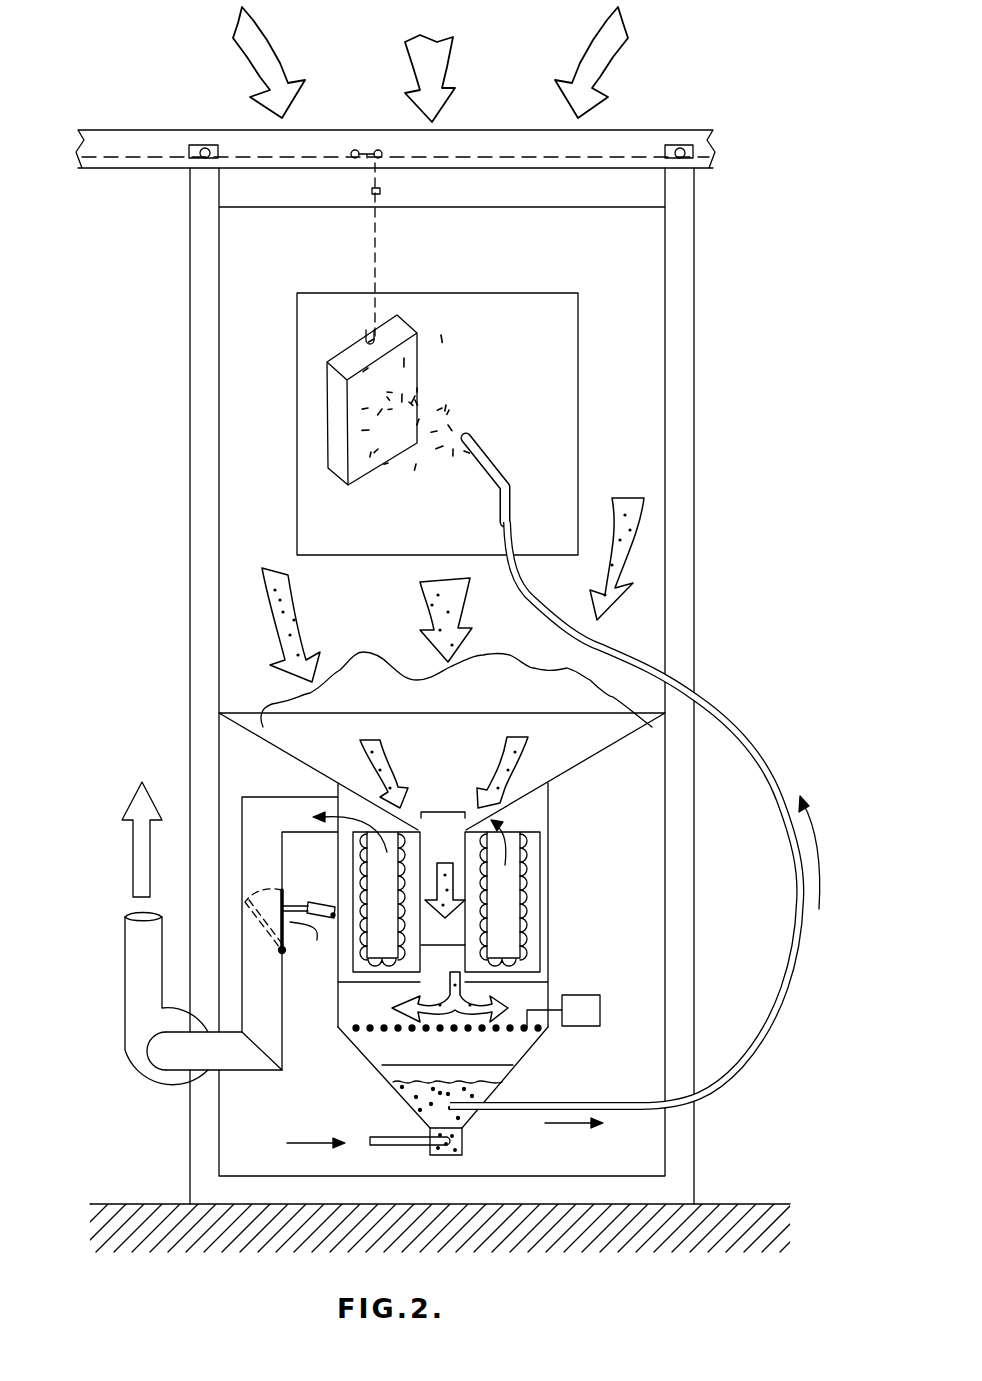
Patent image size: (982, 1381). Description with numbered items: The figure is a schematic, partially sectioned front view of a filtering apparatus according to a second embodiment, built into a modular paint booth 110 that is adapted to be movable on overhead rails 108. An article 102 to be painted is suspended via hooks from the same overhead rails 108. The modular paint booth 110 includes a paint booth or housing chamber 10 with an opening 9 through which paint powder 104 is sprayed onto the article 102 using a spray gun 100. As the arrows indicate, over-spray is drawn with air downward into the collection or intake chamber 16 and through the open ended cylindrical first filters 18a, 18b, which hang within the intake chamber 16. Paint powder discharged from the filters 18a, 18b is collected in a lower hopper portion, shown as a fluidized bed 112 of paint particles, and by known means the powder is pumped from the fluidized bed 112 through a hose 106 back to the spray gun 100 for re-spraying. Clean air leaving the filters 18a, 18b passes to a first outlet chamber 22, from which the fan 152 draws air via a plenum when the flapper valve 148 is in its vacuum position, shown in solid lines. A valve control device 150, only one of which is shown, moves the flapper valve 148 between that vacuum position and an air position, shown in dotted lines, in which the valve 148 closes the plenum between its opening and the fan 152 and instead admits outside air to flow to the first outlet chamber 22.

The opening 9 is at (556, 420).
The housing chamber 10 is at (529, 382).
The intake chamber 16 is at (450, 1062).
The first filter 18a is at (358, 962).
The first filter 18b is at (528, 895).
The first outlet chamber 22 is at (357, 800).
The spray gun 100 is at (503, 488).
The article 102 is at (400, 327).
The paint powder 104 is at (455, 359).
The hose 106 is at (724, 714).
The overhead rails 108 is at (153, 142).
The modular paint booth 110 is at (188, 337).
The fluidized bed 112 is at (460, 1115).
The flapper valve 148 is at (293, 929).
The valve control device 150 is at (323, 905).
The fan 152 is at (135, 990).